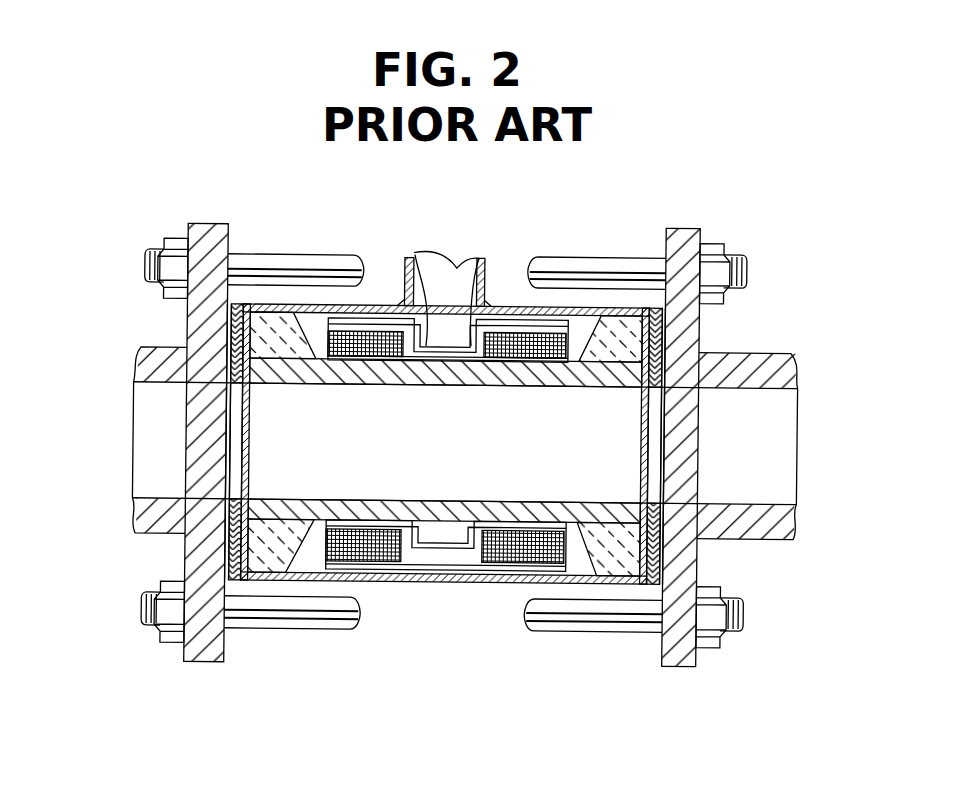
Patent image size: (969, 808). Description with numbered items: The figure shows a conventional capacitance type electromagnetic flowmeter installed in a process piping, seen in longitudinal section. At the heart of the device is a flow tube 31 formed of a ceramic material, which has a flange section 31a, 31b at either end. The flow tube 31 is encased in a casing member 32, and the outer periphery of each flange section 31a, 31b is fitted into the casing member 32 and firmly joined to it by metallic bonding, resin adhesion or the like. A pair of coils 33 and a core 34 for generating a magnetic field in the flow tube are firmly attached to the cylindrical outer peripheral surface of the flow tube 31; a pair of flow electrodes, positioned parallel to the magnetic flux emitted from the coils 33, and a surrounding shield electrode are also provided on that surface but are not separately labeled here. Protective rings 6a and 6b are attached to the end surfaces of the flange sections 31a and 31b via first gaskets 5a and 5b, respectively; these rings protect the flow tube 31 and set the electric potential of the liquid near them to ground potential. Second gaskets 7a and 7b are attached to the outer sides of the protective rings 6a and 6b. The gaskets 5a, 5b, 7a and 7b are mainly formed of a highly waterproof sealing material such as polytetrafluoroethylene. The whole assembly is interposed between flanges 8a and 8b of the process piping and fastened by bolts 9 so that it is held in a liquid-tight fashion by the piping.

The first gasket 5a is at (647, 586).
The first gasket 5b is at (243, 582).
The protective ring 6a is at (653, 588).
The protective ring 6b is at (236, 586).
The second gasket 7a is at (655, 558).
The second gasket 7b is at (229, 543).
The flange 8a is at (690, 233).
The flange 8b is at (209, 228).
The bolt 9 is at (648, 265).
The flow tube 31 is at (577, 367).
The flange section 31a is at (623, 318).
The flange section 31b is at (288, 318).
The casing member 32 is at (507, 311).
The coil 33 is at (360, 333).
The core 34 is at (417, 326).